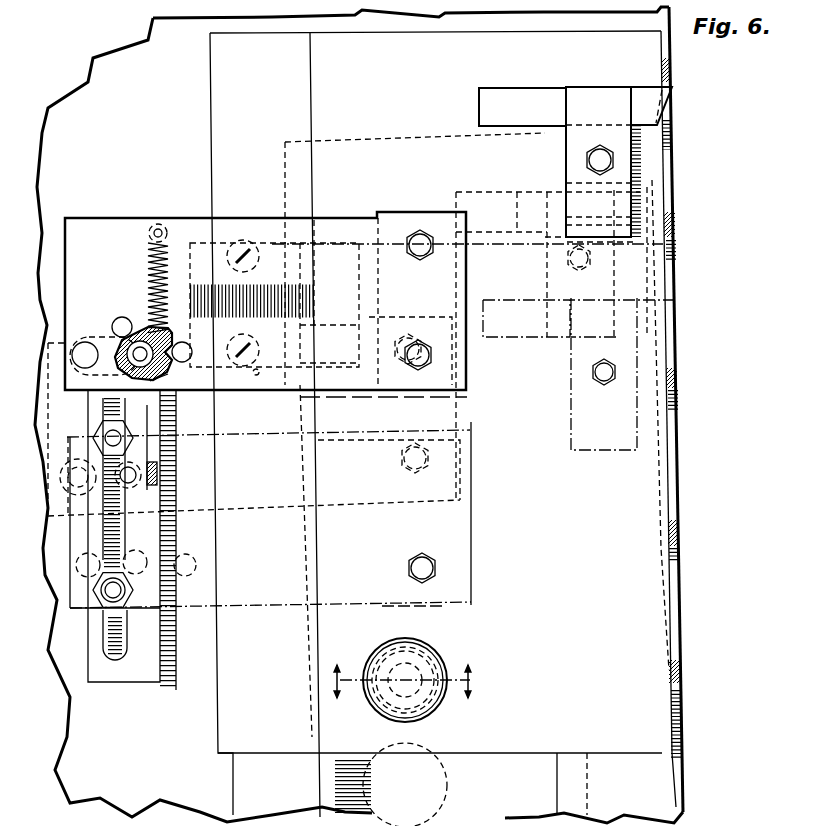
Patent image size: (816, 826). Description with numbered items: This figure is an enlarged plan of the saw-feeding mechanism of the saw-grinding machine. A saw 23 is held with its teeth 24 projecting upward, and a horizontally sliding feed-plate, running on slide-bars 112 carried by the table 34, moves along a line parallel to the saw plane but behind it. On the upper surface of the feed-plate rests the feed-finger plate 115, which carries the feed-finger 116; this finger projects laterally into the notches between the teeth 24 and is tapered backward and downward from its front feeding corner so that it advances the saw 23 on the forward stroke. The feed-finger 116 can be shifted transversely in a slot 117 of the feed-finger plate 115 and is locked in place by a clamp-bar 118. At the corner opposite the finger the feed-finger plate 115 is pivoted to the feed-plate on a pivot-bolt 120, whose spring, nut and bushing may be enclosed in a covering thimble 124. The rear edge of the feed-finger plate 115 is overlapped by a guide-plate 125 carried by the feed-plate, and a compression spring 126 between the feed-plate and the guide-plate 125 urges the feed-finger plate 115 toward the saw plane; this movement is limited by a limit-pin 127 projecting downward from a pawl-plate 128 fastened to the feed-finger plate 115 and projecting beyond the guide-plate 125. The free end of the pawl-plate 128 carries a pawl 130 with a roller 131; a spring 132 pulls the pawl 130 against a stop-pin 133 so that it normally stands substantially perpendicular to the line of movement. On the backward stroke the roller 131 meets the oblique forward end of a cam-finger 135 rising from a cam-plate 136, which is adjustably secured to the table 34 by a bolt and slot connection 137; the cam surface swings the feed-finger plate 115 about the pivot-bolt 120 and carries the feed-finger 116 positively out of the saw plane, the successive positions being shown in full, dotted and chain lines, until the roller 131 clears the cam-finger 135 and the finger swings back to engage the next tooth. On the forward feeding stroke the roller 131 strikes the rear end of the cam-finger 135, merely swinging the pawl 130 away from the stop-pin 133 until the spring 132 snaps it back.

The table 34 is at (359, 415).
The saw 23 is at (675, 190).
The teeth 24 is at (677, 233).
The feed-finger plate 115 is at (436, 424).
The slide-bars 112 is at (447, 784).
The feed-finger 116 is at (672, 100).
The slot 117 is at (513, 104).
The clamp-bar 118 is at (576, 152).
The pivot-bolt 120 is at (412, 663).
The covering thimble 124 is at (440, 660).
The guide-plate 125 is at (270, 243).
The compression spring 126 is at (257, 378).
The limit-pin 127 is at (187, 361).
The pawl-plate 128 is at (97, 227).
The pawl 130 is at (137, 330).
The roller 131 is at (162, 381).
The spring 132 is at (167, 236).
The stop-pin 133 is at (114, 321).
The cam-finger 135 is at (157, 423).
The cam-plate 136 is at (152, 674).
The bolt and slot connection 137 is at (160, 435).